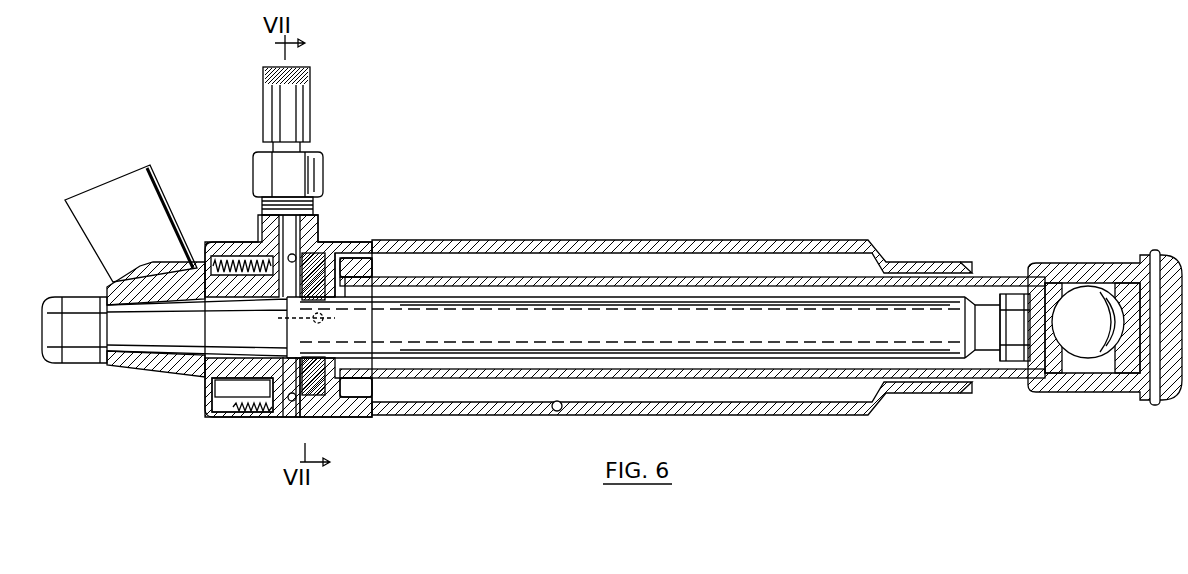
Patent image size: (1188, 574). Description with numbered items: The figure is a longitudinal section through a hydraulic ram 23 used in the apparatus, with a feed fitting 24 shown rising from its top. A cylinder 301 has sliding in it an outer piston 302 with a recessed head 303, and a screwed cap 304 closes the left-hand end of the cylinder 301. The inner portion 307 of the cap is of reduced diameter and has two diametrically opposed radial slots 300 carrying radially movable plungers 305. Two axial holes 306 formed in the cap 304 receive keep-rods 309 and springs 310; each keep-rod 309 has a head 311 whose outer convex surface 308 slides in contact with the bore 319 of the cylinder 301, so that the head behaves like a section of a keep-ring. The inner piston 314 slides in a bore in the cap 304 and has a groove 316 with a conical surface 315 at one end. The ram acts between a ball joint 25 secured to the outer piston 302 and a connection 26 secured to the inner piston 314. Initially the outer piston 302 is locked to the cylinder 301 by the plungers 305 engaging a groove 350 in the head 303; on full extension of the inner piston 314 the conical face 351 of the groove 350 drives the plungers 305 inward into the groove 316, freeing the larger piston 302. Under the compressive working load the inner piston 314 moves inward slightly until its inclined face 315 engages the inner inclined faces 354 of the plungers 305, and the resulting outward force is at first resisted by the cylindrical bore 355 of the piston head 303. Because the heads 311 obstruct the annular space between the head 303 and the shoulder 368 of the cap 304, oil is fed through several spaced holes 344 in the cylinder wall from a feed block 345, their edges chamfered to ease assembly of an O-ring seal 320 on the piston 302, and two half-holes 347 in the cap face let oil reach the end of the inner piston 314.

The cylinder housing 23 is at (836, 238).
The adjusting cap 24 is at (310, 73).
The ball joint 25 is at (1093, 350).
The connection 26 is at (107, 368).
The radial slots 300 is at (285, 298).
The cylinder 301 is at (508, 247).
The outer piston 302 is at (639, 380).
The recessed head 303 is at (380, 271).
The screwed cap 304 is at (207, 388).
The plungers 305 is at (326, 402).
The axial holes 306 is at (292, 394).
The inner portion of reduced diameter 307 is at (352, 404).
The outer convex surface 308 is at (283, 418).
The keep-rods 309 is at (263, 241).
The springs 310 is at (199, 264).
The head 311 is at (270, 216).
The inner piston 314 is at (626, 305).
The conical surface 315 is at (980, 360).
The groove 316 is at (983, 297).
The bore 319 is at (557, 411).
The O-ring seal 320 is at (383, 250).
The holes 344 is at (262, 199).
The feed block 345 is at (316, 200).
The holes 347 is at (374, 382).
The groove 350 is at (345, 257).
The conical face 351 is at (306, 236).
The inner inclined faces 354 is at (329, 324).
The cylindrical bore 355 is at (302, 248).
The shoulder 368 is at (228, 418).